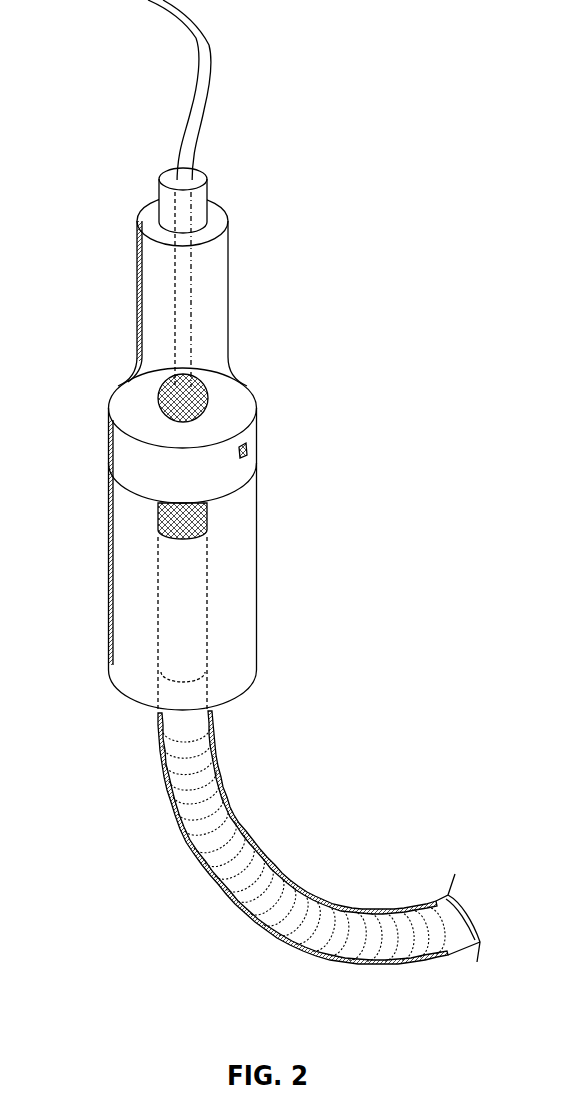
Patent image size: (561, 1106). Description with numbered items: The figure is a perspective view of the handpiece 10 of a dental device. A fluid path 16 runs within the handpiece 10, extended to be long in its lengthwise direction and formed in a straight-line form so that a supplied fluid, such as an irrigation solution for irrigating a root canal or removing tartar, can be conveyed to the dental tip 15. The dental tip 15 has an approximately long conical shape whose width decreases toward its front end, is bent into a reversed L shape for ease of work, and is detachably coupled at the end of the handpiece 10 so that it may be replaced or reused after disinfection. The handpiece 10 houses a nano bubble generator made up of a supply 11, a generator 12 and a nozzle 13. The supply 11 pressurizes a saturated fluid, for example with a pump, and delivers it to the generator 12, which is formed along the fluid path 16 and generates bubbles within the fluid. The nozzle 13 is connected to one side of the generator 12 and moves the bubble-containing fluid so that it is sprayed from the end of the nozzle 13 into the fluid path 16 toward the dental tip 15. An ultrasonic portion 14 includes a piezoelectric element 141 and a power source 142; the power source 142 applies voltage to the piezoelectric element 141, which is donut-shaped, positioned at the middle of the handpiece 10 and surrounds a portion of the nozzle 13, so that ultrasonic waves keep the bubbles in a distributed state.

The handpiece 10 is at (268, 219).
The supply 11 is at (253, 847).
The generator 12 is at (201, 523).
The nozzle 13 is at (213, 388).
The ultrasonic portion 14 is at (270, 539).
The piezoelectric element 141 is at (256, 432).
The power source 142 is at (306, 463).
The dental tip 15 is at (207, 51).
The fluid path 16 is at (193, 283).